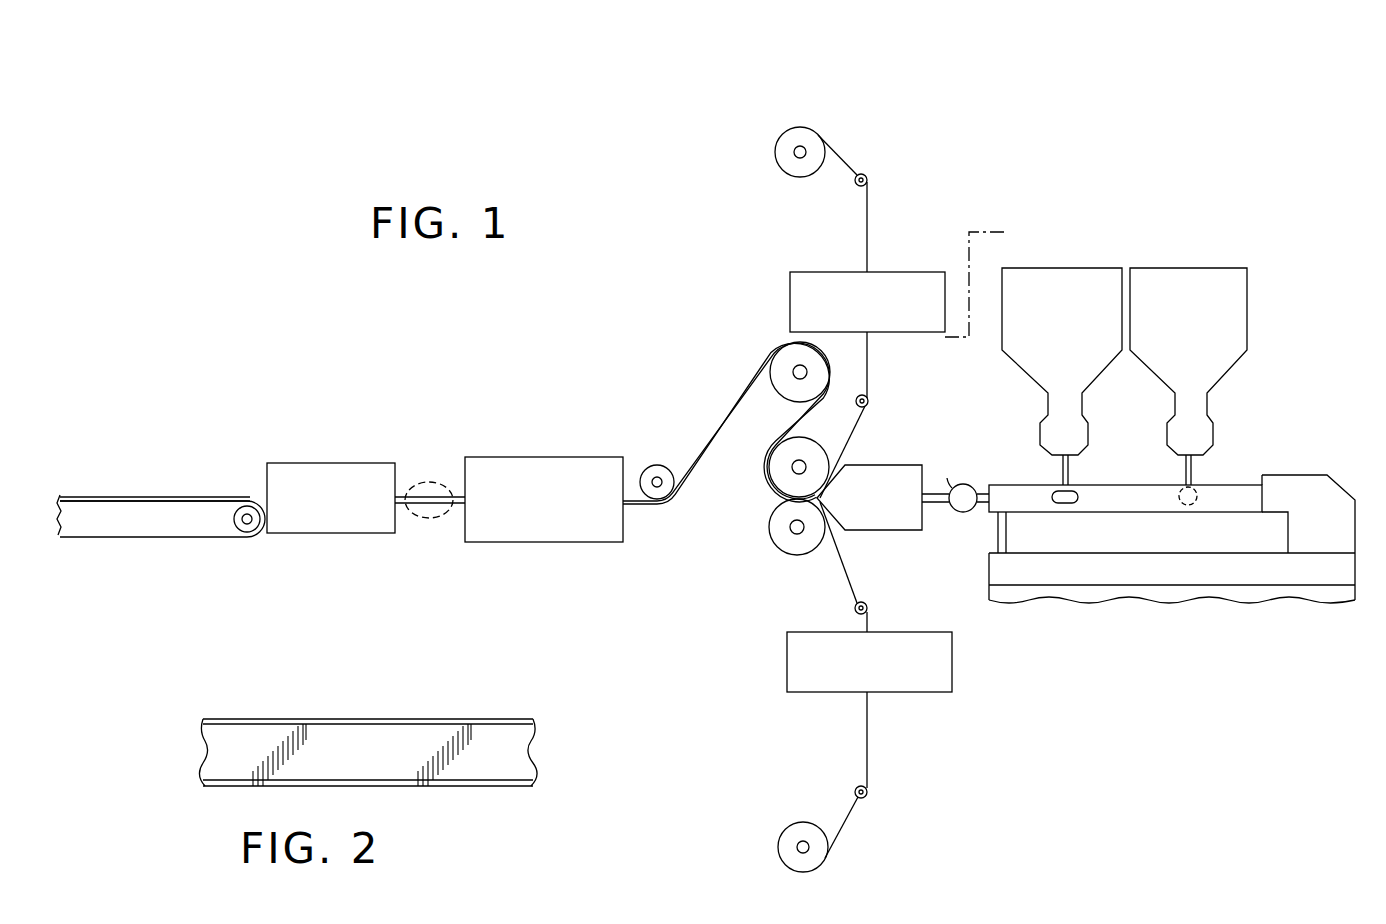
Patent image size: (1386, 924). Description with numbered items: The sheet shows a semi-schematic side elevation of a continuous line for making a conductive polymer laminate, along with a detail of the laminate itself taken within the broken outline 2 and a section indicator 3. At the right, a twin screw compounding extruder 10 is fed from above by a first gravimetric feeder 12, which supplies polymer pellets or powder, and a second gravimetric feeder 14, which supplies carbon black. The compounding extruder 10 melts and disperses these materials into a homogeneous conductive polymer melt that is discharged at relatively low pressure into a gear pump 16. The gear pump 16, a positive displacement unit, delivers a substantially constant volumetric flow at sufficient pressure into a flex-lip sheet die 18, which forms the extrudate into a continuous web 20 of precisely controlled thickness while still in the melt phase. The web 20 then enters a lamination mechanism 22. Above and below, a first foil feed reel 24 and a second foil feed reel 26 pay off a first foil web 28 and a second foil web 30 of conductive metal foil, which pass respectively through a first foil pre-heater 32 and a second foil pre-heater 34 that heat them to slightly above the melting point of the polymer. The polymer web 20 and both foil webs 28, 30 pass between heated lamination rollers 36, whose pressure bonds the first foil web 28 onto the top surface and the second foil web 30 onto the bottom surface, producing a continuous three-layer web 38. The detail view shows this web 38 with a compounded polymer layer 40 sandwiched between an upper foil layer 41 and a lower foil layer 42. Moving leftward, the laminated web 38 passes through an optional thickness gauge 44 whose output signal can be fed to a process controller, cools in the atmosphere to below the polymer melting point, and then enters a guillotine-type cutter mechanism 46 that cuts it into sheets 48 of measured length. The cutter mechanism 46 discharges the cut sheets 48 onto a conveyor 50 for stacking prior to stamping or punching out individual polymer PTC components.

In FIG. 1, the broken outline 2 is at (432, 472).
In FIG. 1, the section line for FIG. 3 is at (100, 342).
In FIG. 1, the twin screw compounding extruder 10 is at (1338, 475).
In FIG. 1, the first gravimetric feeder 12 is at (1210, 268).
In FIG. 1, the second gravimetric feeder 14 is at (1092, 268).
In FIG. 1, the gear pump 16 is at (960, 514).
In FIG. 1, the flex-lip sheet die 18 is at (901, 466).
In FIG. 1, the web 20 is at (818, 500).
In FIG. 1, the lamination mechanism 22 is at (731, 232).
In FIG. 1, the first foil feed reel 24 is at (775, 152).
In FIG. 1, the second foil feed reel 26 is at (781, 836).
In FIG. 1, the first foil web 28 is at (869, 220).
In FIG. 1, the second foil web 30 is at (869, 748).
In FIG. 1, the first foil pre-heater 32 is at (790, 290).
In FIG. 1, the second foil pre-heater 34 is at (952, 668).
In FIG. 1, the lamination rollers 36 is at (813, 448).
In FIG. 1, the three-layer web 38 is at (730, 410).
In FIG. 2, the three-layer web 38 is at (397, 733).
In FIG. 2, the compounded polymer layer 40 is at (533, 752).
In FIG. 2, the upper foil layer 41 is at (533, 719).
In FIG. 2, the lower foil layer 42 is at (533, 783).
In FIG. 1, the thickness gauge 44 is at (566, 458).
In FIG. 1, the cutter mechanism 46 is at (342, 533).
In FIG. 1, the sheets 48 is at (187, 497).
In FIG. 1, the conveyor 50 is at (178, 537).